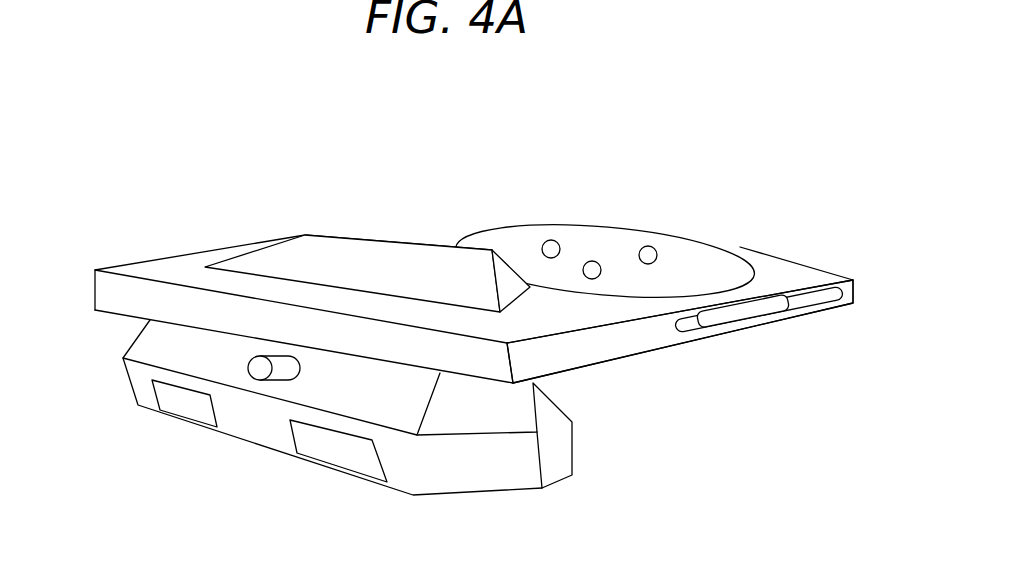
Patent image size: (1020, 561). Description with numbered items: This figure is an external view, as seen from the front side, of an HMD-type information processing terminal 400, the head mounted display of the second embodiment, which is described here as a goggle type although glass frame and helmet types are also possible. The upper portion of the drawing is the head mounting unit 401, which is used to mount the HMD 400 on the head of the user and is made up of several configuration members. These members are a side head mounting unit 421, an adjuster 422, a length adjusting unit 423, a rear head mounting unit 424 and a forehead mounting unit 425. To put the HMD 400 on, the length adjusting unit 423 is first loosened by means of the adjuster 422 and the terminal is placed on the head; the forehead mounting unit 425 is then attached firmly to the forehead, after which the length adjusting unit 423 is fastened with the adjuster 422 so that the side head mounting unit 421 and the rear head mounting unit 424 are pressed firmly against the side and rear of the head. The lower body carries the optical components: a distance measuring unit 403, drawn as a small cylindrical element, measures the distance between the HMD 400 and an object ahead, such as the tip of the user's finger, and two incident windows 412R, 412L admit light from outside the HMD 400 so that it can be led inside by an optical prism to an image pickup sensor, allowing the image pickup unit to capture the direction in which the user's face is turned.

The HMD-type information processing terminal 400 is at (290, 202).
The head mounting unit 401 is at (605, 215).
The distance measuring unit 403 is at (262, 373).
The incident window 412R is at (183, 403).
The incident window 412L is at (342, 450).
The side head mounting unit 421 is at (635, 350).
The adjuster 422 is at (743, 320).
The length adjusting unit 423 is at (792, 273).
The rear head mounting unit 424 is at (592, 232).
The forehead mounting unit 425 is at (386, 255).